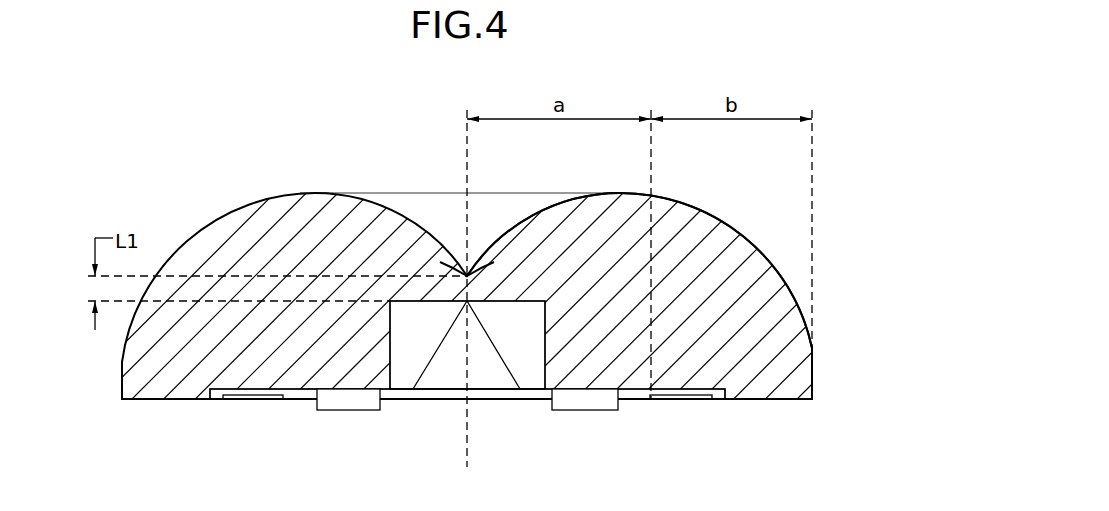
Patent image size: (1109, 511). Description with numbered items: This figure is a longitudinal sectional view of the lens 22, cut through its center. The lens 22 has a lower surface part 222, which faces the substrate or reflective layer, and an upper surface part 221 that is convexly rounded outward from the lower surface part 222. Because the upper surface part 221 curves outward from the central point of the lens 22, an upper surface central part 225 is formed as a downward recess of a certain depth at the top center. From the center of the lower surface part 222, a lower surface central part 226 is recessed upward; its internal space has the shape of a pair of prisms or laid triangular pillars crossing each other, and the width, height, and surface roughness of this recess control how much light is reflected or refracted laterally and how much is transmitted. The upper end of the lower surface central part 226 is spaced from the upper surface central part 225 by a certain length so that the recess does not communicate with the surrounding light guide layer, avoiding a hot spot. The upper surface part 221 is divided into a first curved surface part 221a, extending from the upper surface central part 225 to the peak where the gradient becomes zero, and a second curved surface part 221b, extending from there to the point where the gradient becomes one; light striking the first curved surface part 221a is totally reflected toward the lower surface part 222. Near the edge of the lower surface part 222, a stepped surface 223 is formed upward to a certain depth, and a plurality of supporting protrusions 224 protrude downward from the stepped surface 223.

The lens 22 is at (180, 194).
The upper surface part 221 is at (897, 176).
The first curved surface part 221a is at (565, 196).
The second curved surface part 221b is at (724, 224).
The lower surface part 222 is at (778, 399).
The stepped surface 223 is at (693, 399).
The supporting protrusion 224 is at (588, 410).
The upper surface central part 225 is at (467, 275).
The lower surface central part 226 is at (450, 367).